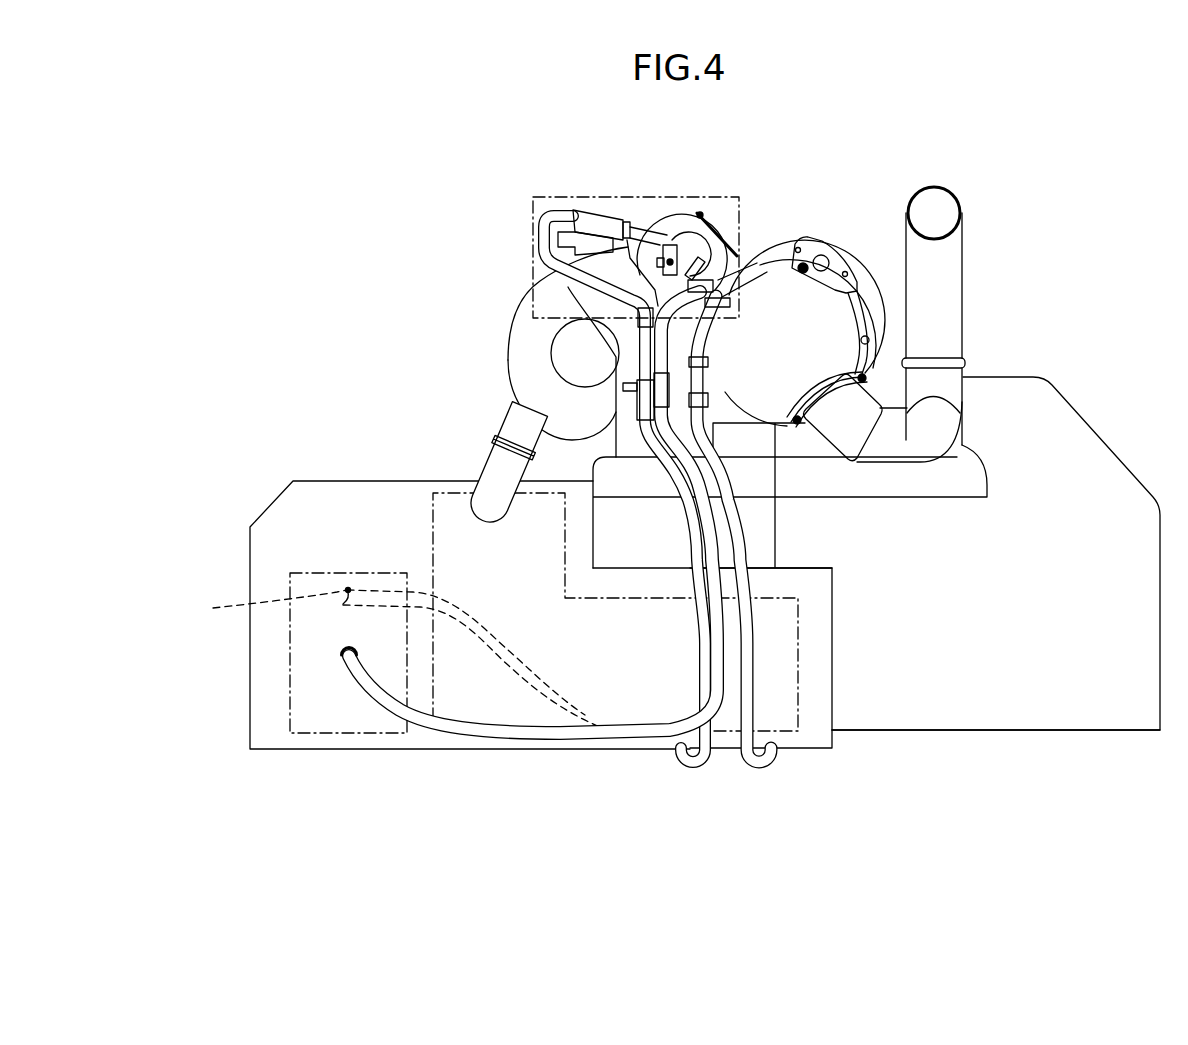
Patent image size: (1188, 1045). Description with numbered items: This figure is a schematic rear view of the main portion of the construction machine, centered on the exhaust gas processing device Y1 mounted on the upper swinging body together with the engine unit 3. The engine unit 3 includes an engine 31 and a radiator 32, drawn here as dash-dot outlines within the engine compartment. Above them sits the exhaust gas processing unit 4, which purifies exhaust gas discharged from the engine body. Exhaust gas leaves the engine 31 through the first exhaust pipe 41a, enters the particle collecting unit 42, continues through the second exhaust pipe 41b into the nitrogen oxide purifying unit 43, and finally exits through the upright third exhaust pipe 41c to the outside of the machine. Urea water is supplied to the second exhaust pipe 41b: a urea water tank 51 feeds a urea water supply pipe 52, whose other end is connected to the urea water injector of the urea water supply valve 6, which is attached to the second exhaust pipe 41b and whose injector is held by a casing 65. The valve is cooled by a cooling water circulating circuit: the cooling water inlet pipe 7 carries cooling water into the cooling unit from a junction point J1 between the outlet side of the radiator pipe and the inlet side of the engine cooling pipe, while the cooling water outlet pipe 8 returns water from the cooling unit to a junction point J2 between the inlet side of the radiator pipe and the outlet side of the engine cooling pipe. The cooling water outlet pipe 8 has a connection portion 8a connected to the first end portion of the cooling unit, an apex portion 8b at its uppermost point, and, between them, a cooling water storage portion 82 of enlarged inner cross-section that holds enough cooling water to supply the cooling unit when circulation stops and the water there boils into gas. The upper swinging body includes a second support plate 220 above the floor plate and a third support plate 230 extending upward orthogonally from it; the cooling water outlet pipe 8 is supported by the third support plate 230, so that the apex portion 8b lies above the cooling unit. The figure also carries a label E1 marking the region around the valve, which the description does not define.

The engine unit 3 is at (428, 768).
The engine 31 is at (433, 530).
The radiator 32 is at (337, 737).
The exhaust gas processing unit 4 is at (718, 190).
The first exhaust pipe 41a is at (497, 473).
The second exhaust pipe 41b is at (712, 236).
The third exhaust pipe 41c is at (945, 298).
The particle collecting unit 42 is at (527, 318).
The nitrogen oxide purifying unit 43 is at (810, 292).
The urea water tank 51 is at (912, 717).
The urea water supply pipe 52 is at (762, 748).
The urea water supply valve 6 is at (680, 226).
The casing 65 is at (688, 250).
The cooling water inlet pipe 7 is at (733, 742).
The cooling water outlet pipe 8 is at (520, 738).
The connection portion 8a is at (660, 247).
The apex portion 8b is at (556, 208).
The cooling water storage portion 82 is at (602, 218).
The second support plate 220 is at (950, 481).
The third support plate 230 is at (607, 331).
The injector region E1 is at (533, 233).
The junction point J1 is at (389, 658).
The junction point J2 is at (337, 651).
The exhaust gas processing device Y1 is at (845, 212).